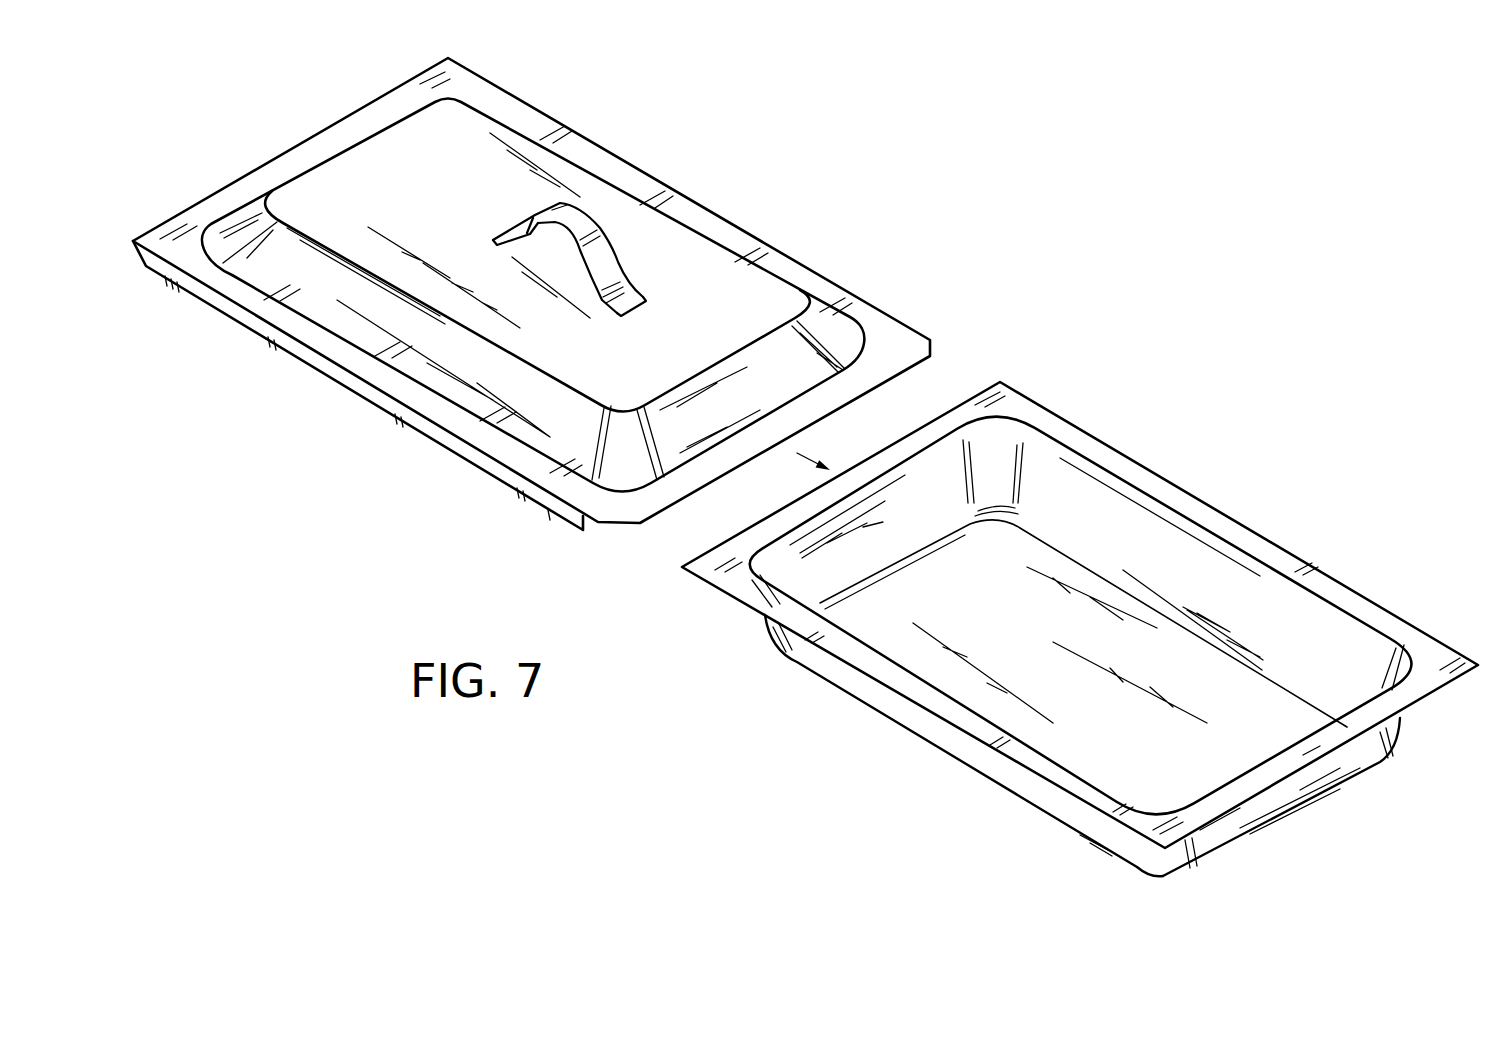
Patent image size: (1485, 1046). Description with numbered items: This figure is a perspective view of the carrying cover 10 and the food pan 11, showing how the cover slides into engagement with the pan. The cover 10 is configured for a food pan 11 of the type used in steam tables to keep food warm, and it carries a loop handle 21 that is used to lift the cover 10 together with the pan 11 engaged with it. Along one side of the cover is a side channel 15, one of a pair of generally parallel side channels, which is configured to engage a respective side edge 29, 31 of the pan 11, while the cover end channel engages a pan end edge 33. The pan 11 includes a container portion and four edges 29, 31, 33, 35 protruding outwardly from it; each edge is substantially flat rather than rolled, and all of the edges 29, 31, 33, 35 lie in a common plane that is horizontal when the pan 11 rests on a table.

The carrying cover 10 is at (531, 294).
The food pan 11 is at (1080, 586).
The side channel 15 is at (467, 453).
The loop handle 21 is at (601, 266).
The side edge 29 is at (1146, 478).
The side edge 31 is at (885, 678).
The pan end edge 33 is at (929, 432).
The edge 35 is at (1338, 737).